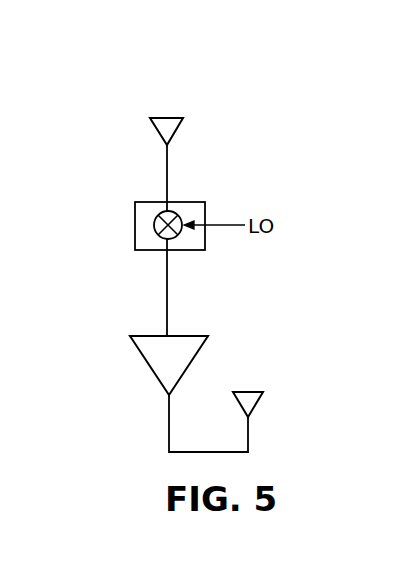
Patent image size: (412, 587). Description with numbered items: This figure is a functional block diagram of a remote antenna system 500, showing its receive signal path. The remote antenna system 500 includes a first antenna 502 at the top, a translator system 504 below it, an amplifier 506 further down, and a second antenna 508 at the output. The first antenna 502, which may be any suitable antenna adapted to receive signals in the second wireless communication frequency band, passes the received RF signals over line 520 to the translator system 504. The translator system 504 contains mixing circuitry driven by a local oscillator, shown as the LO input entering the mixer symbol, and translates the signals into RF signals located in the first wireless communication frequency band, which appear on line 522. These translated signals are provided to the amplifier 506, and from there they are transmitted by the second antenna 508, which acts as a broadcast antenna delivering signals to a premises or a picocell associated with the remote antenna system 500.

The remote antenna system 500 is at (246, 131).
The first antenna 502 is at (160, 118).
The translator system 504 is at (140, 223).
The amplifier 506 is at (153, 355).
The second antenna 508 is at (250, 392).
The line 520 is at (167, 173).
The line 522 is at (167, 288).